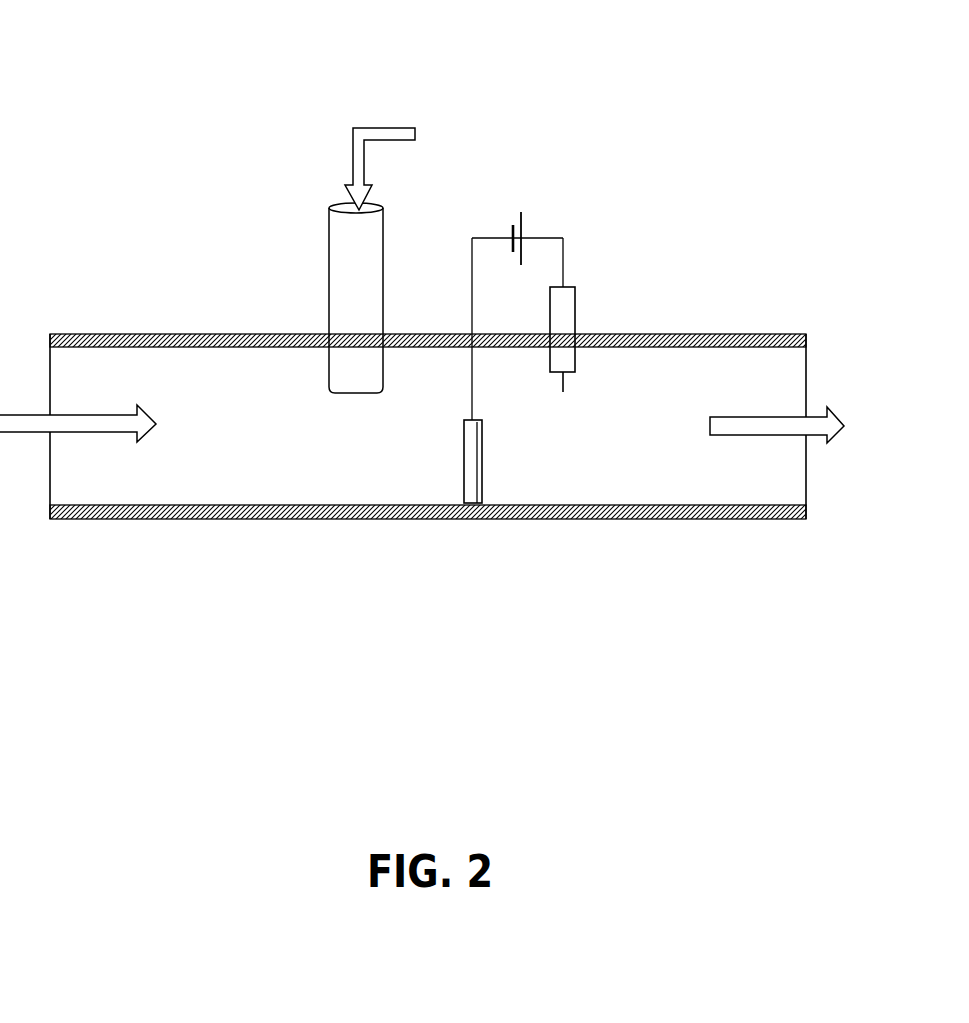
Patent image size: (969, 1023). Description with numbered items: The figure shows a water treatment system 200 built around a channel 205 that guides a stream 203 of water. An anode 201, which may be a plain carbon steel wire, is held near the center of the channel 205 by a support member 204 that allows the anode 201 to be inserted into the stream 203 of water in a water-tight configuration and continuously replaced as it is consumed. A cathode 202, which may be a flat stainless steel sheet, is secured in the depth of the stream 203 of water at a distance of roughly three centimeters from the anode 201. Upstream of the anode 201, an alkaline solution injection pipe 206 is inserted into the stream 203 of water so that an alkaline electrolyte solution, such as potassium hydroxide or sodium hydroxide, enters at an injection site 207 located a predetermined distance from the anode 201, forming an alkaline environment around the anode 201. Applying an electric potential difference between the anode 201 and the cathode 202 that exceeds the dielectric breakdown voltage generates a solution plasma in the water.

The water treatment system 200 is at (170, 105).
The anode 201 is at (563, 380).
The cathode 202 is at (482, 457).
The stream of water 203 is at (225, 474).
The support member 204 is at (577, 295).
The channel 205 is at (358, 518).
The alkaline solution injection pipe 206 is at (536, 221).
The injection site 207 is at (369, 405).